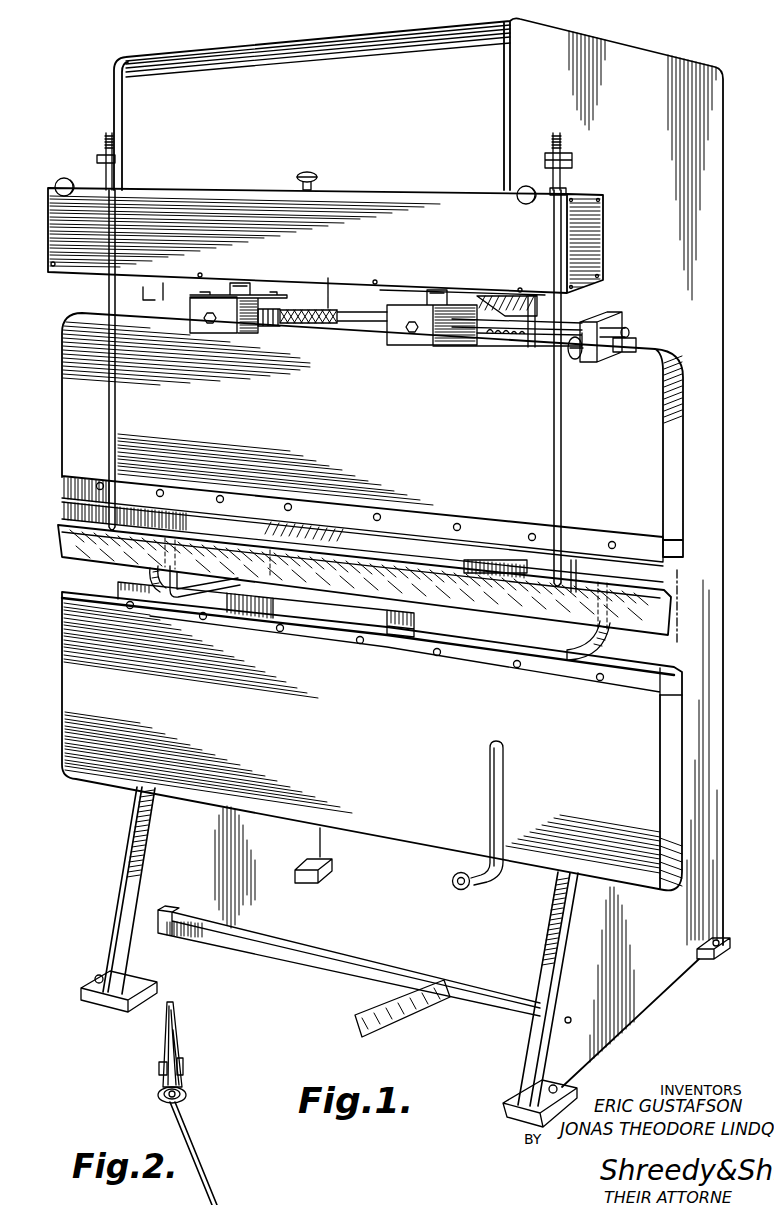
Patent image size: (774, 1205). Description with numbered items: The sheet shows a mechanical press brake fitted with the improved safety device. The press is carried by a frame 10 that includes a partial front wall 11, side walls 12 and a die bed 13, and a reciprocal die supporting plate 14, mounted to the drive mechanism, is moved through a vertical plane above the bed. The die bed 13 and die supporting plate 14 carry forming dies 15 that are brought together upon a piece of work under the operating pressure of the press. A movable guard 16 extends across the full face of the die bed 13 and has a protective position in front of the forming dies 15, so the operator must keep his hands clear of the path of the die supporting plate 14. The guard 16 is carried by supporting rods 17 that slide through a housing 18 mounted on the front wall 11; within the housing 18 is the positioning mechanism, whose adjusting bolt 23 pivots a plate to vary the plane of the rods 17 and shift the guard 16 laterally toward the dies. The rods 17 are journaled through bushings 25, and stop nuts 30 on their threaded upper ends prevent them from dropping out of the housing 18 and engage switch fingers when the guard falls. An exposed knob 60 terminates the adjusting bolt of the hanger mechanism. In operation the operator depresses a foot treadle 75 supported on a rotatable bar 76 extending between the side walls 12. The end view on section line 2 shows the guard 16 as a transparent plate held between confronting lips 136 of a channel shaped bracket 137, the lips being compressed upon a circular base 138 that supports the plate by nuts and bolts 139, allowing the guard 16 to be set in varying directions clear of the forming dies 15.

In FIG. 1, the frame 10 is at (757, 260).
In FIG. 1, the partial front wall 11 is at (330, 109).
In FIG. 1, the side walls 12 is at (153, 813).
In FIG. 1, the die bed 13 is at (332, 735).
In FIG. 1, the die supporting plate 14 is at (366, 428).
In FIG. 1, the forming dies 15 is at (387, 535).
In FIG. 1, the guard 16 is at (569, 622).
In FIG. 2, the guard 16 is at (203, 1172).
In FIG. 1, the supporting rods 17 is at (117, 423).
In FIG. 1, the housing 18 is at (358, 250).
In FIG. 1, the adjusting bolt 23 is at (53, 196).
In FIG. 1, the bushings 25 is at (565, 193).
In FIG. 1, the stop nuts 30 is at (98, 161).
In FIG. 1, the knob 60 is at (318, 181).
In FIG. 1, the foot treadle 75 is at (402, 1023).
In FIG. 1, the rotatable bar 76 is at (469, 993).
In FIG. 2, the confronting lips 136 is at (189, 1097).
In FIG. 1, the channel shaped bracket 137 is at (573, 576).
In FIG. 2, the channel shaped bracket 137 is at (178, 1034).
In FIG. 2, the circular base 138 is at (172, 1103).
In FIG. 2, the nuts and bolts 139 is at (187, 1069).
In FIG. 1, the section line 2- 2 is at (679, 637).